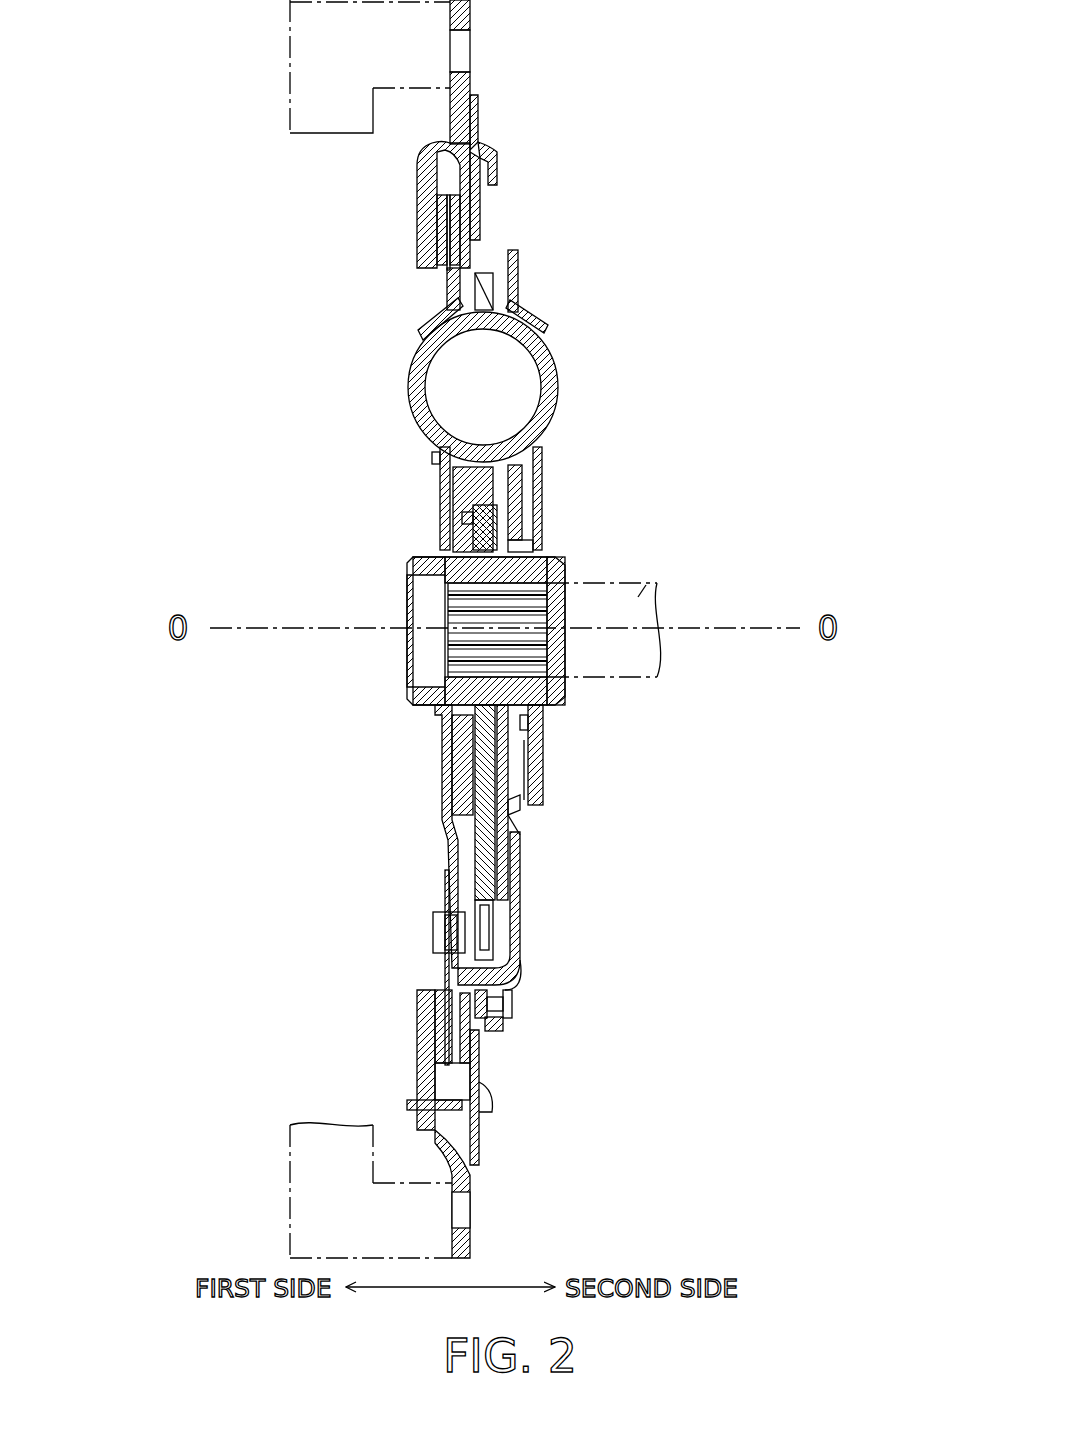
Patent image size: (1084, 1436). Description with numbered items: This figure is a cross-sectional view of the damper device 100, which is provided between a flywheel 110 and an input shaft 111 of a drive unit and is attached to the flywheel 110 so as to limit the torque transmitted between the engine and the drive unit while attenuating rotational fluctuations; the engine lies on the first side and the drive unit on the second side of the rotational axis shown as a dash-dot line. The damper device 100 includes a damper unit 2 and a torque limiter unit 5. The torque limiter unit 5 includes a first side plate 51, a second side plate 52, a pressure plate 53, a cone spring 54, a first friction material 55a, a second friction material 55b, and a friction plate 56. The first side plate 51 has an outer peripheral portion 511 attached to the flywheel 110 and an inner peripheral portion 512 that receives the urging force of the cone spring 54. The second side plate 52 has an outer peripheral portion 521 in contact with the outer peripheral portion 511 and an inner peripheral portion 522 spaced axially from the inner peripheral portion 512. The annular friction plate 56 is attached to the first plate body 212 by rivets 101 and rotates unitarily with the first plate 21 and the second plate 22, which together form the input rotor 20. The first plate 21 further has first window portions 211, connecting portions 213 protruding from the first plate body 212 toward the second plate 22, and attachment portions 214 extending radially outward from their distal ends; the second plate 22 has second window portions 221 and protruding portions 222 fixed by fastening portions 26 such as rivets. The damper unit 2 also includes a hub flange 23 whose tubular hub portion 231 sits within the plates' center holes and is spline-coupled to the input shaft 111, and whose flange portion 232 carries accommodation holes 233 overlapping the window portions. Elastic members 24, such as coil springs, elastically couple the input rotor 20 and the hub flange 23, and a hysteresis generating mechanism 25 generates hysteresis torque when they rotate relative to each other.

The damper unit 2 is at (649, 309).
The torque limiter unit 5 is at (542, 64).
The input rotor 20 is at (427, 818).
The first plate 21 is at (427, 318).
The second plate 22 is at (519, 253).
The hub flange 23 is at (568, 553).
The elastic members 24 is at (549, 404).
The hysteresis generating mechanism 25 is at (457, 483).
The fastening portions 26 is at (510, 1000).
The first side plate 51 is at (419, 147).
The second side plate 52 is at (499, 153).
The pressure plate 53 is at (468, 260).
The cone spring 54 is at (479, 216).
The first friction material 55a is at (440, 212).
The second friction material 55b is at (456, 248).
The friction plate 56 is at (447, 276).
The damper device 100 is at (697, 128).
The rivets 101 is at (440, 945).
The flywheel 110 is at (296, 30).
The input shaft 111 is at (660, 580).
The first window portion 211 is at (420, 353).
The first plate body 212 is at (447, 882).
The connecting portions 213 is at (468, 986).
The attachment portions 214 is at (488, 1031).
The second window portion 221 is at (543, 328).
The protruding portions 222 is at (504, 1028).
The hub portion 231 is at (546, 700).
The flange portion 232 is at (482, 790).
The accommodation holes 233 is at (522, 307).
The outer peripheral portion 511 is at (472, 86).
The inner peripheral portion 512 is at (420, 170).
The outer peripheral portion 521 is at (478, 107).
The inner peripheral portion 522 is at (498, 181).